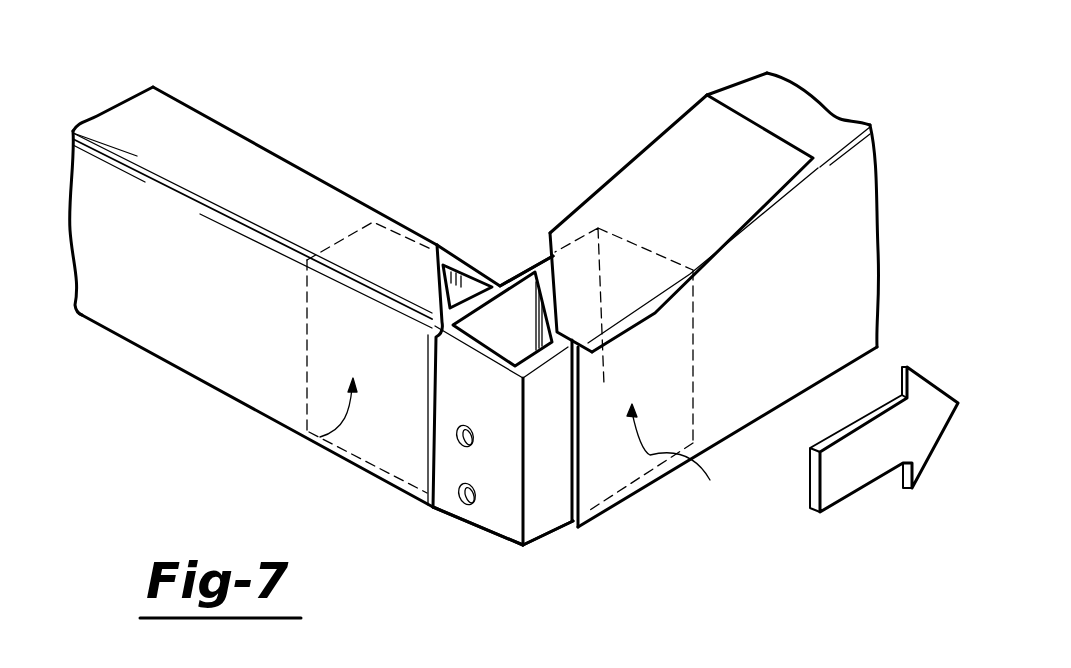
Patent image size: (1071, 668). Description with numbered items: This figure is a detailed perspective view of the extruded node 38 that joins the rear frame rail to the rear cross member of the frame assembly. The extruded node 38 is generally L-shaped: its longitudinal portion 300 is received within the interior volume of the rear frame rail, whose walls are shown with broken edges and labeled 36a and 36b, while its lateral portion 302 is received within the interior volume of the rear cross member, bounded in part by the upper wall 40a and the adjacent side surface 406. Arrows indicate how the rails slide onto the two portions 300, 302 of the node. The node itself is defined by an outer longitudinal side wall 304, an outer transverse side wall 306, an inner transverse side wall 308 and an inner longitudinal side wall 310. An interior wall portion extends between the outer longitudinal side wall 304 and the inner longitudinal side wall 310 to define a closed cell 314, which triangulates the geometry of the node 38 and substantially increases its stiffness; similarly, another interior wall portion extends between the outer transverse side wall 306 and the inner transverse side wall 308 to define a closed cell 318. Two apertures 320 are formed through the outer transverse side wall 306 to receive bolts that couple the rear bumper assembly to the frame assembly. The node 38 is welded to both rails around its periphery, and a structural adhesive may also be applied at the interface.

The upper wall 40a is at (208, 140).
The front surface of side rail 406 is at (167, 316).
The extruded node 38 is at (503, 215).
The inner transverse side wall 308 is at (440, 253).
The inner longitudinal side wall 310 is at (532, 257).
The closed cell 318 is at (458, 288).
The closed cell 314 is at (525, 335).
The apertures 320 is at (463, 450).
The outer transverse side wall 306 is at (512, 527).
The outer longitudinal side wall 304 is at (563, 505).
The lateral portion 302 is at (312, 437).
The longitudinal portion 300 is at (654, 372).
The upper portion of end rail 36a is at (827, 117).
The lower portion of end rail 36b is at (860, 262).